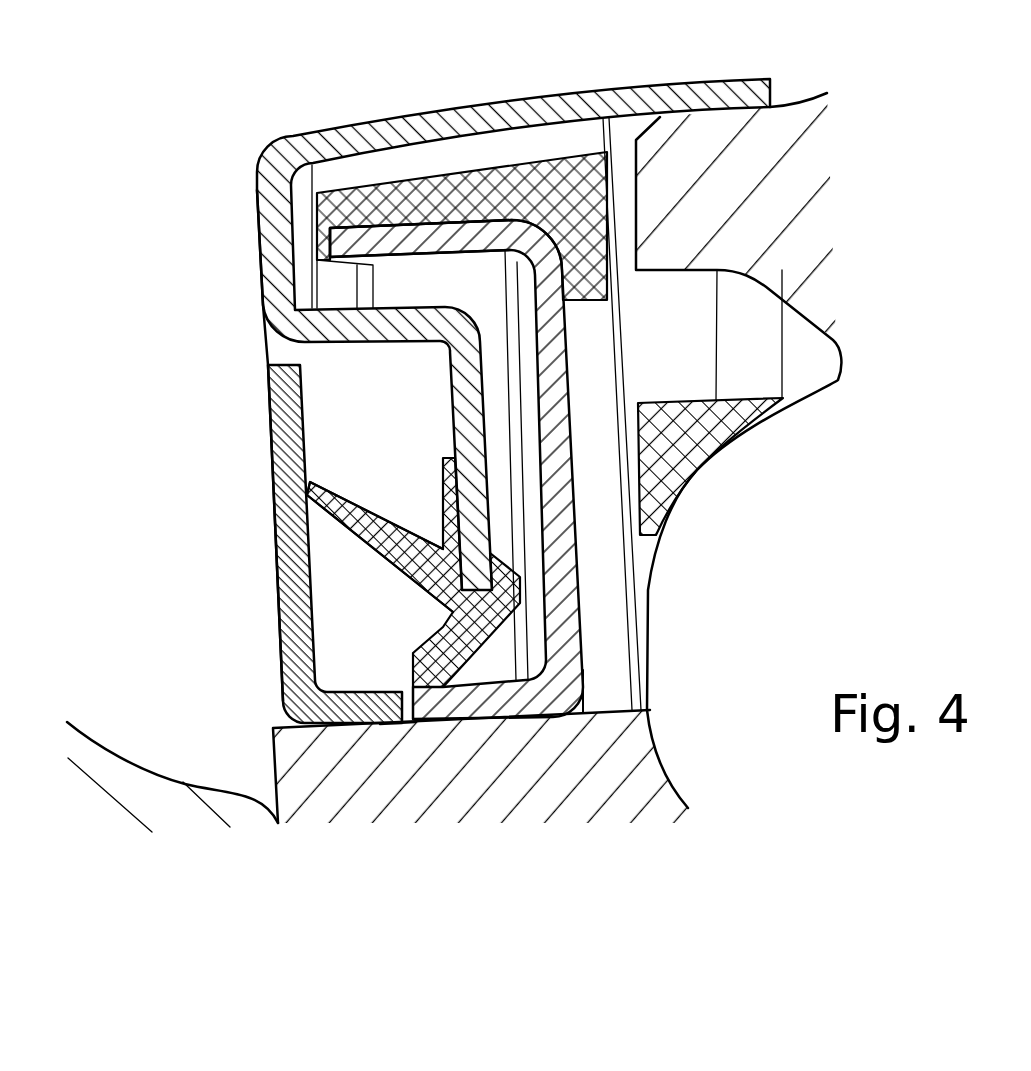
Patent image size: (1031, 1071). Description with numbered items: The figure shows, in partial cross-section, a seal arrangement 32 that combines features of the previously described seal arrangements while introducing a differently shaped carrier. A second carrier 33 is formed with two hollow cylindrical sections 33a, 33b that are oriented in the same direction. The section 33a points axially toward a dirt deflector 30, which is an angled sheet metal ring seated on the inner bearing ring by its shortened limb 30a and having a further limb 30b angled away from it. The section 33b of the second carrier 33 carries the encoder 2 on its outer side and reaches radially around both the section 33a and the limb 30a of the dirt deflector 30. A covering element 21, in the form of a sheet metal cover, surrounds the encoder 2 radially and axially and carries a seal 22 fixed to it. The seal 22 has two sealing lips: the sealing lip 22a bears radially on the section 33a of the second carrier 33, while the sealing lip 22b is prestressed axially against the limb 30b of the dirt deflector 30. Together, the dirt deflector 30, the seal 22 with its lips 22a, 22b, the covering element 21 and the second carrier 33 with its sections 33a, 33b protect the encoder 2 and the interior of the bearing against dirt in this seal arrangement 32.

The encoder 2 is at (533, 193).
The covering element 21 is at (255, 186).
The seal 22 is at (448, 605).
The sealing lip 22a is at (408, 712).
The second sealing lip 22b is at (338, 497).
The dirt deflector 30 is at (290, 582).
The limb 30a is at (335, 735).
The limb 30b is at (272, 428).
The seal arrangement 32 is at (872, 104).
The second carrier 33 is at (563, 563).
The hollow cylindrical section 33a is at (470, 723).
The hollow cylindrical section 33b is at (363, 187).